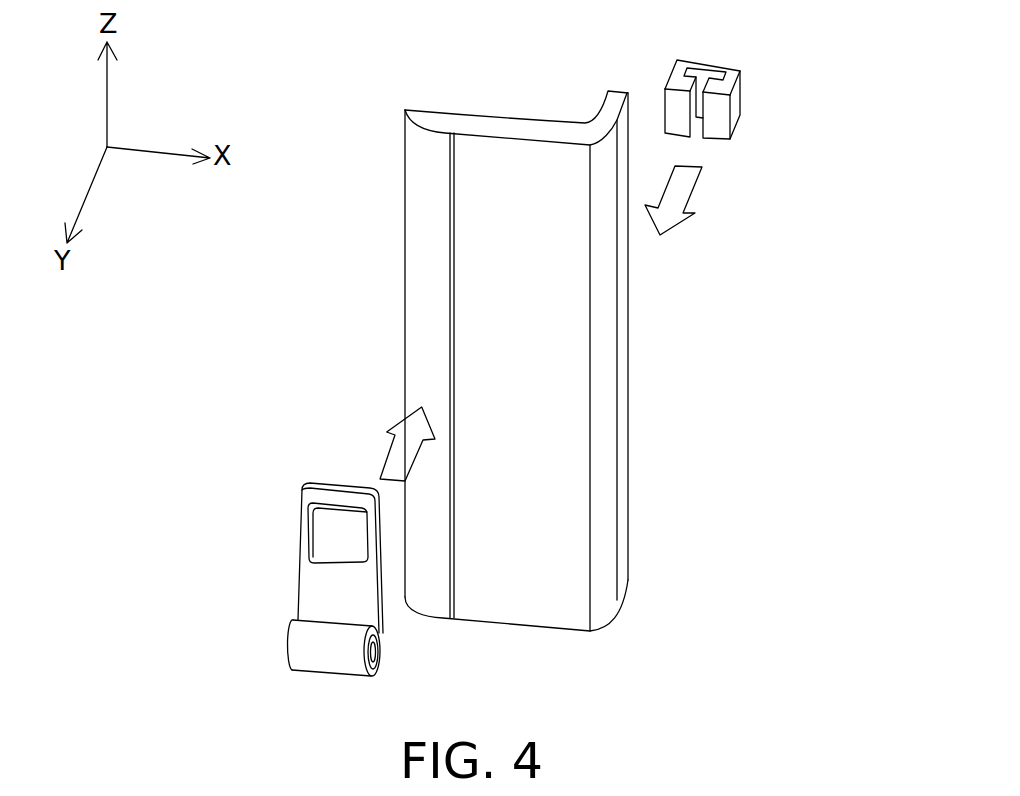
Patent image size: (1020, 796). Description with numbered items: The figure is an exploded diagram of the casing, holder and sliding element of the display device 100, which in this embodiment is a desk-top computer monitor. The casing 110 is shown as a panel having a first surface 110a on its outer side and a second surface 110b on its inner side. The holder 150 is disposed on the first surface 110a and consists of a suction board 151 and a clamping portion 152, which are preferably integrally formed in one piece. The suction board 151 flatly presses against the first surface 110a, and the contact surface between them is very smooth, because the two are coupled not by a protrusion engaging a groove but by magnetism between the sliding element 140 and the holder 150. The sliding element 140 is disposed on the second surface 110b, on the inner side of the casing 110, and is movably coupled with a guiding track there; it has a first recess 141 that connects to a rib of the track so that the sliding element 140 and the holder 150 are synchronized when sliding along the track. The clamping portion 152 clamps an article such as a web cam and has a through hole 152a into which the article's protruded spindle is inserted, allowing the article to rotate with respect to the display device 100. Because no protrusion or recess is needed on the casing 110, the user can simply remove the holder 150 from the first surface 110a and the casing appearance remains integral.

The display device 100 is at (872, 38).
The casing 110 is at (488, 319).
The first surface 110a is at (497, 188).
The second surface 110b is at (483, 114).
The sliding element 140 is at (780, 140).
The first recess 141 is at (698, 140).
The holder 150 is at (127, 560).
The suction board 151 is at (313, 578).
The clamping portion 152 is at (344, 641).
The through hole 152a is at (377, 652).